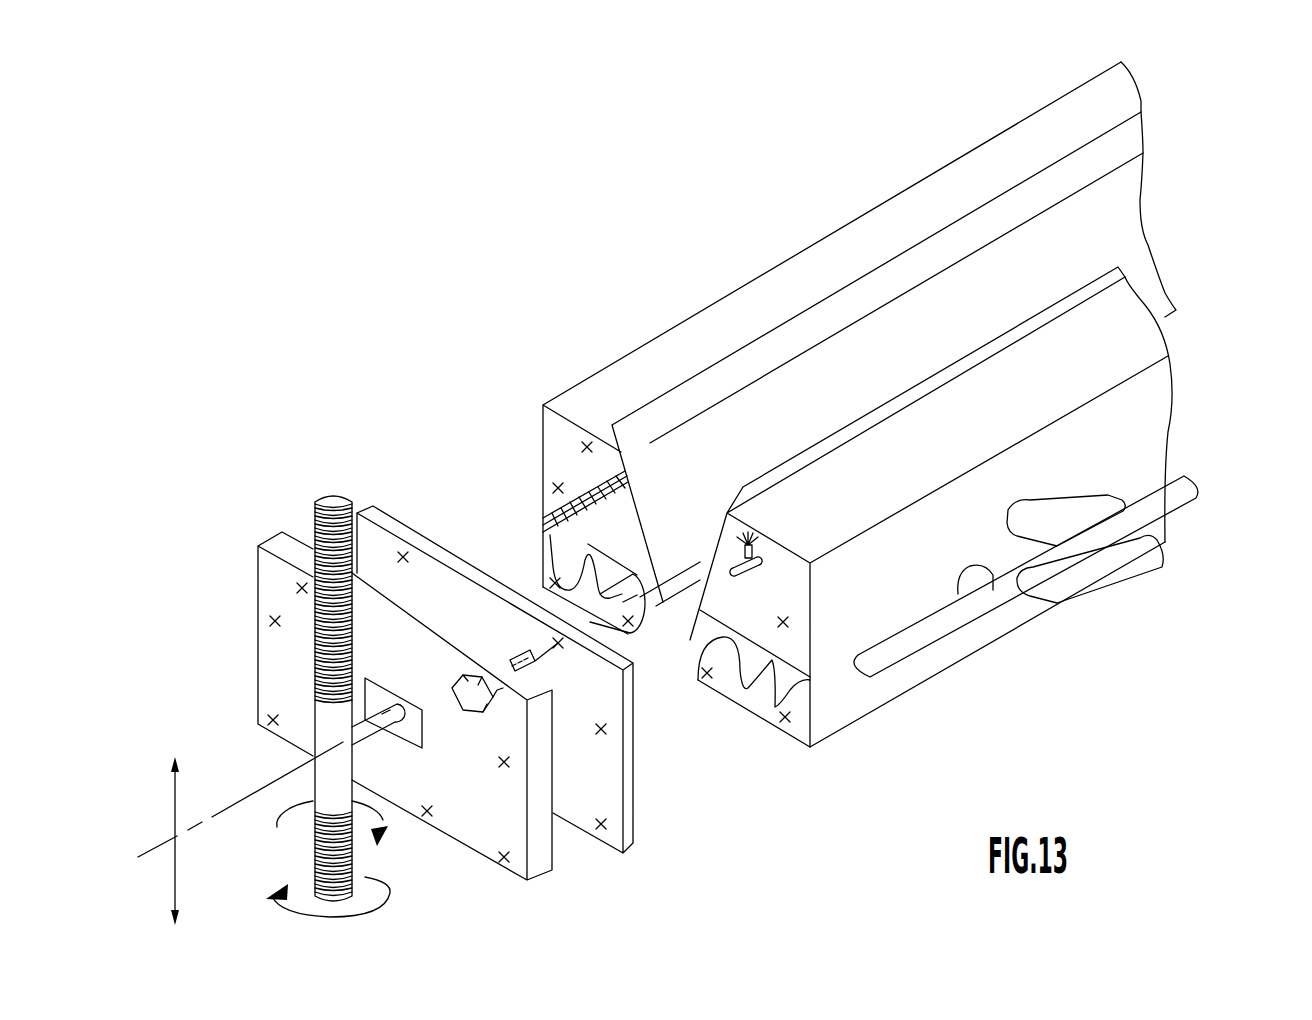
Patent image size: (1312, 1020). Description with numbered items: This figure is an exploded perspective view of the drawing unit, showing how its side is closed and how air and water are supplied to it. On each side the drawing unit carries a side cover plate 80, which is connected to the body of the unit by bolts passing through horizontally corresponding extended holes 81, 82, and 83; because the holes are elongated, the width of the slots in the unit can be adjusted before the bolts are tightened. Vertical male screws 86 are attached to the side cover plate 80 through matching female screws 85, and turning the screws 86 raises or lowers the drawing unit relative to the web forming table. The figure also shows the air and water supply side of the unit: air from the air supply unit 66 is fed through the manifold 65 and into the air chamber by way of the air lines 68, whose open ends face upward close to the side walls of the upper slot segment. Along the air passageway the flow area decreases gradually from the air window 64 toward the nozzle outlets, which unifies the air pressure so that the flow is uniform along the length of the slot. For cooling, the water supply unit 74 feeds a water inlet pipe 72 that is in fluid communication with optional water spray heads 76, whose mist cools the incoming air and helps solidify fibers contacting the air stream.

The air window 64 is at (550, 515).
The manifold 65 is at (918, 636).
The air supply unit 66 is at (1172, 535).
The air lines 68 is at (968, 580).
The water inlet pipe 72 is at (1090, 508).
The water supply unit 74 is at (1135, 486).
The water spray heads 76 is at (757, 553).
The side cover plate 80 is at (470, 787).
The extended hole 81 is at (302, 590).
The extended hole 82 is at (275, 622).
The extended hole 83 is at (273, 721).
The female screws 85 is at (322, 730).
The male screws 86 is at (313, 512).